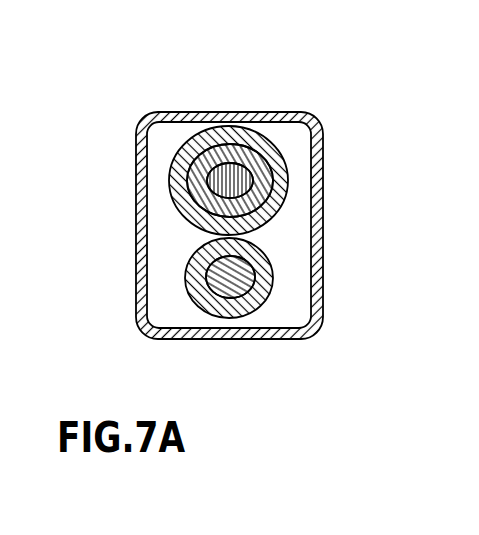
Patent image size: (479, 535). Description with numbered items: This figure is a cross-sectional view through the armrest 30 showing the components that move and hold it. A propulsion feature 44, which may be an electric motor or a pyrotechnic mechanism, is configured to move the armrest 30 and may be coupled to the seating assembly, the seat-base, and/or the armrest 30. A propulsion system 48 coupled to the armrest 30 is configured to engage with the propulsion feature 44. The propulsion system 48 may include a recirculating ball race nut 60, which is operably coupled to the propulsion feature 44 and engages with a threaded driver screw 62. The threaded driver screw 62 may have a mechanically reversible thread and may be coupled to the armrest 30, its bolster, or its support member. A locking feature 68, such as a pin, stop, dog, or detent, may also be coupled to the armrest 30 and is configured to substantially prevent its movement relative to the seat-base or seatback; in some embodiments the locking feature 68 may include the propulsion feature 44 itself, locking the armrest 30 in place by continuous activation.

The armrest 30 is at (268, 108).
The propulsion system 48 is at (186, 223).
The recirculating ball race nut 60 is at (197, 175).
The threaded driver screw 62 is at (243, 181).
The locking feature 68 is at (250, 291).
The propulsion feature 44 is at (223, 281).